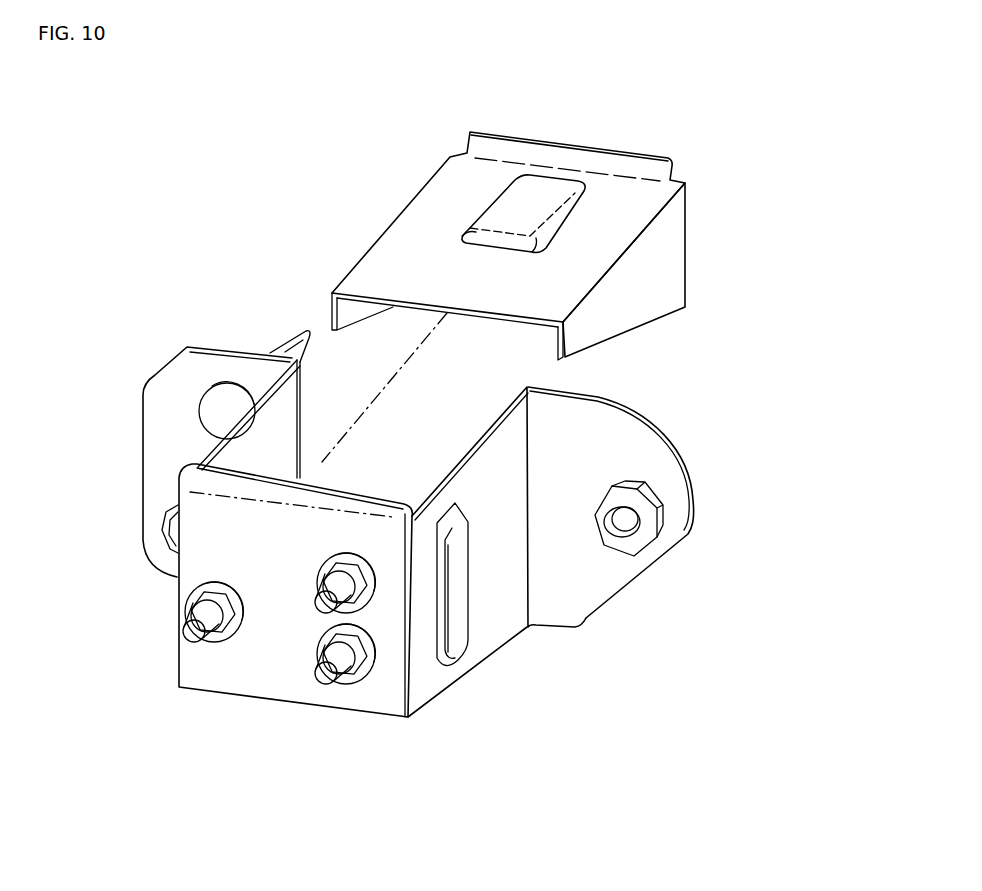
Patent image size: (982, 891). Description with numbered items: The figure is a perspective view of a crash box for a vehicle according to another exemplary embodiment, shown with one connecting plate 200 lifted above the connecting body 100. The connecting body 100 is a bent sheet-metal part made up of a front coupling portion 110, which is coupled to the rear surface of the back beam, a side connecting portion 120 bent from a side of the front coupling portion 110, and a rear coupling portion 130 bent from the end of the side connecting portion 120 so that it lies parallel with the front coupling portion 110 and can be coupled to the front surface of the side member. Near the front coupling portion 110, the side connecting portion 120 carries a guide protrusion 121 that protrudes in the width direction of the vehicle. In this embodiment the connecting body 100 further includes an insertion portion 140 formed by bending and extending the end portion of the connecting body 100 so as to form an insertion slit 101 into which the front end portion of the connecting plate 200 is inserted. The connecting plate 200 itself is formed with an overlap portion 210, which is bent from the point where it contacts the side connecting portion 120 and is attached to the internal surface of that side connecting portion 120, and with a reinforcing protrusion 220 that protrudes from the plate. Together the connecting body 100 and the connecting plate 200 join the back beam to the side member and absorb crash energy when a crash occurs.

The connecting body 100 is at (443, 558).
The insertion slit 101 is at (417, 692).
The front coupling portion 110 is at (193, 665).
The side connecting portion 120 is at (497, 569).
The guide protrusion 121 is at (443, 657).
The rear coupling portion 130 is at (590, 570).
The insertion portion 140 is at (203, 478).
The connecting plate 200 is at (620, 193).
The overlap portion 210 is at (658, 275).
The reinforcing protrusion 220 is at (537, 188).